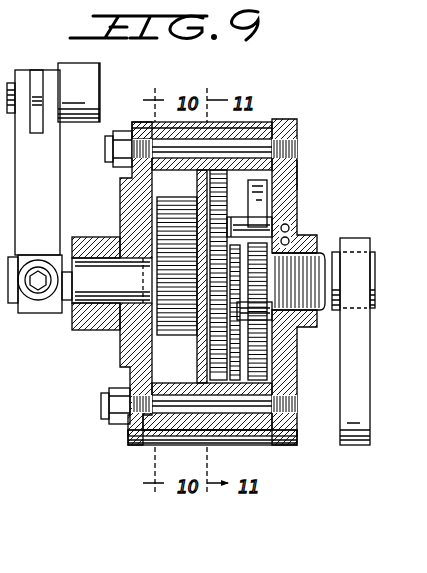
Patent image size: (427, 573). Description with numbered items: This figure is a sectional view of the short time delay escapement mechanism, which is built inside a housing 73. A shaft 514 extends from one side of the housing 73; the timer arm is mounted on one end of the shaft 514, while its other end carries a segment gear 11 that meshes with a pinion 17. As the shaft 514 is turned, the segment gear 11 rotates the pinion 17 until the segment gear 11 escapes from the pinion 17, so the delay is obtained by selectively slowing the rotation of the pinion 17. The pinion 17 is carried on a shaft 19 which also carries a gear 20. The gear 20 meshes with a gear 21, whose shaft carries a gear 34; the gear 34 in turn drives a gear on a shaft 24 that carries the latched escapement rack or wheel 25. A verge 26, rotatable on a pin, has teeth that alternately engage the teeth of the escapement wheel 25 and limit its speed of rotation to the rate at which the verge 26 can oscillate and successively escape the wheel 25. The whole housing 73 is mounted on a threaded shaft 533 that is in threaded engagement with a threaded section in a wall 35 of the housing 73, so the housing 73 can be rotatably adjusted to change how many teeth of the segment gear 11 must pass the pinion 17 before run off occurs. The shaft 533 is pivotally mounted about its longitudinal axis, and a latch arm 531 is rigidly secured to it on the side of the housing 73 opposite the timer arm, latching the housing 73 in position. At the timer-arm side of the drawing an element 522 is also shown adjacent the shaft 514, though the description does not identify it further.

The housing 73 is at (303, 114).
The segment gear 11 is at (165, 338).
The pinion 17 is at (178, 200).
The shaft 19 is at (238, 224).
The gear 20 is at (297, 168).
The gear 21 is at (183, 337).
The shaft 24 is at (216, 340).
The escapement wheel 25 is at (281, 345).
The verge 26 is at (264, 202).
The gear 34 is at (248, 370).
The wall 35 is at (297, 180).
The shaft 514 is at (12, 310).
The arm bracket 522 is at (100, 85).
The latch arm 531 is at (359, 240).
The threaded shaft 533 is at (324, 250).